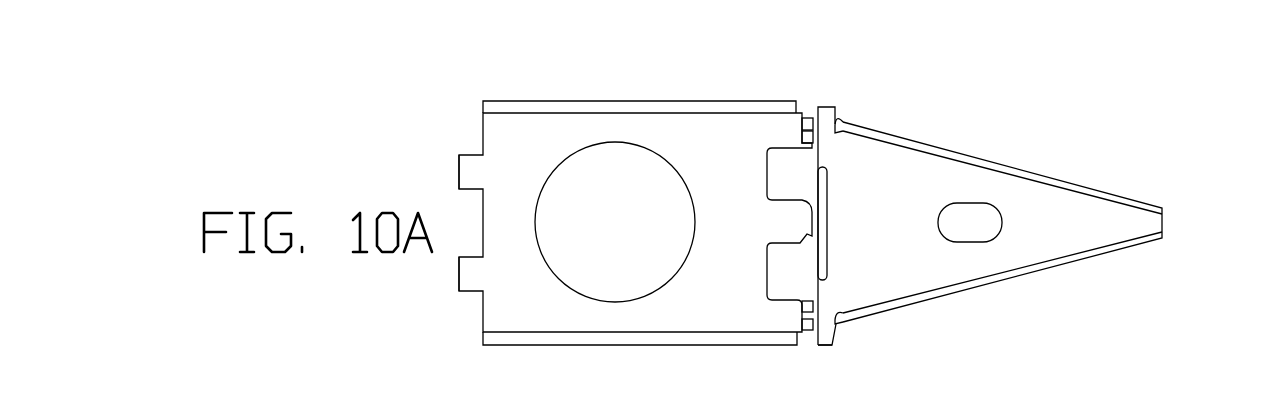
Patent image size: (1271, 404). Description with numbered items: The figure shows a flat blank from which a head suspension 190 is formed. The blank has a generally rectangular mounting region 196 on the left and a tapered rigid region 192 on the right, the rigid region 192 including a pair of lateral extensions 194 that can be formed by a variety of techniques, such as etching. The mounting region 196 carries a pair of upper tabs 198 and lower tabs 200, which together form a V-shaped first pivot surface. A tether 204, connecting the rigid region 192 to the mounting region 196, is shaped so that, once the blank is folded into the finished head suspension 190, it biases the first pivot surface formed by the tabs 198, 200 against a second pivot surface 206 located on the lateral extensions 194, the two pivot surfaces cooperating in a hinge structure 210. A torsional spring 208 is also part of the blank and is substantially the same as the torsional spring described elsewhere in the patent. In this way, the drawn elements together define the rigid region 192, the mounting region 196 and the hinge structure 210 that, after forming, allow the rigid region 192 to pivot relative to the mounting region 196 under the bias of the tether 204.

The head suspension 190 is at (1139, 273).
The rigid region 192 is at (1070, 217).
The lateral extensions 194 is at (828, 110).
The mounting region 196 is at (548, 128).
The upper tabs 198 is at (805, 307).
The lower tabs 200 is at (812, 332).
The tether 204 is at (785, 220).
The second pivot surface 206 is at (838, 322).
The torsional spring 208 is at (822, 182).
The hinge structure 210 is at (668, 402).